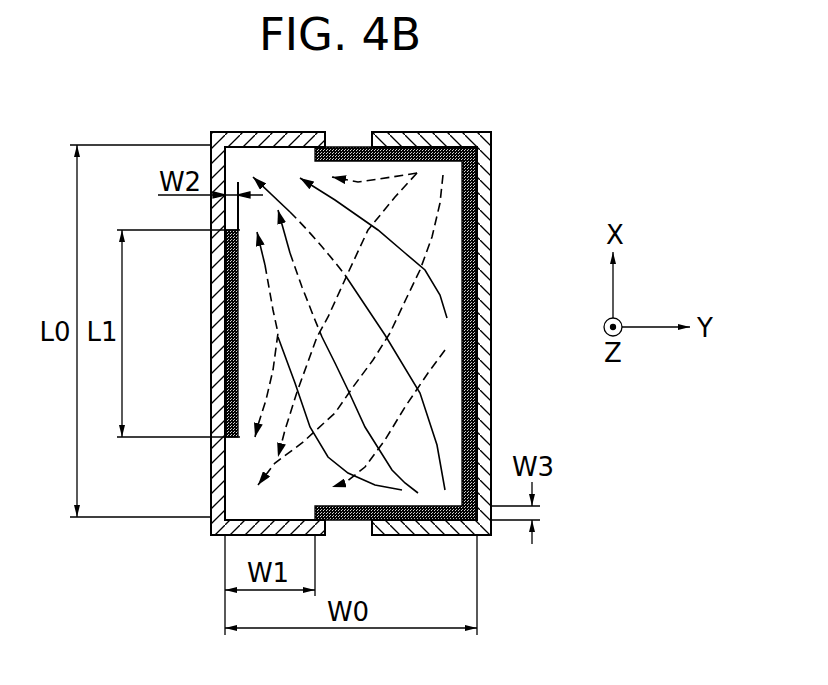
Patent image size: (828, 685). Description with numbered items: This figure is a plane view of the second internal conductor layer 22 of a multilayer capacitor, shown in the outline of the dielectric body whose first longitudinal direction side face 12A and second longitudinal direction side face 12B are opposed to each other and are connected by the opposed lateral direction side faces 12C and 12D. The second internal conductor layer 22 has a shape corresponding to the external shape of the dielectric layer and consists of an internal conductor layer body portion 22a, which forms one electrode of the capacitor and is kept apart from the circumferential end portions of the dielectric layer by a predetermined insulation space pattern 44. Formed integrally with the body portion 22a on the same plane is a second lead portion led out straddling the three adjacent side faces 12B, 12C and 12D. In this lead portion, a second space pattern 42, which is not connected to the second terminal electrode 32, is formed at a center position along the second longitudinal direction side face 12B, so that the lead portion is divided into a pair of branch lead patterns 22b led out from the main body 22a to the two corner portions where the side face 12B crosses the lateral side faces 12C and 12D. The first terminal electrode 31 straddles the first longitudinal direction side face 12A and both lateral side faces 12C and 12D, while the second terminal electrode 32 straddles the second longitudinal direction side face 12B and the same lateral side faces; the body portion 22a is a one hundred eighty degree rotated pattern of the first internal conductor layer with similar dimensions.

The first longitudinal direction side face 12A is at (475, 390).
The second longitudinal direction side face 12B is at (227, 290).
The lateral direction side face 12C is at (350, 535).
The lateral direction side face 12D is at (352, 146).
The second internal conductor layer 22 is at (357, 293).
The internal conductor layer body portion 22a is at (423, 338).
The branch lead patterns 22b is at (253, 160).
The first terminal electrode 31 is at (350, 331).
The second terminal electrode 32 is at (220, 215).
The second space pattern 42 is at (230, 371).
The insulation space pattern 44 is at (440, 147).